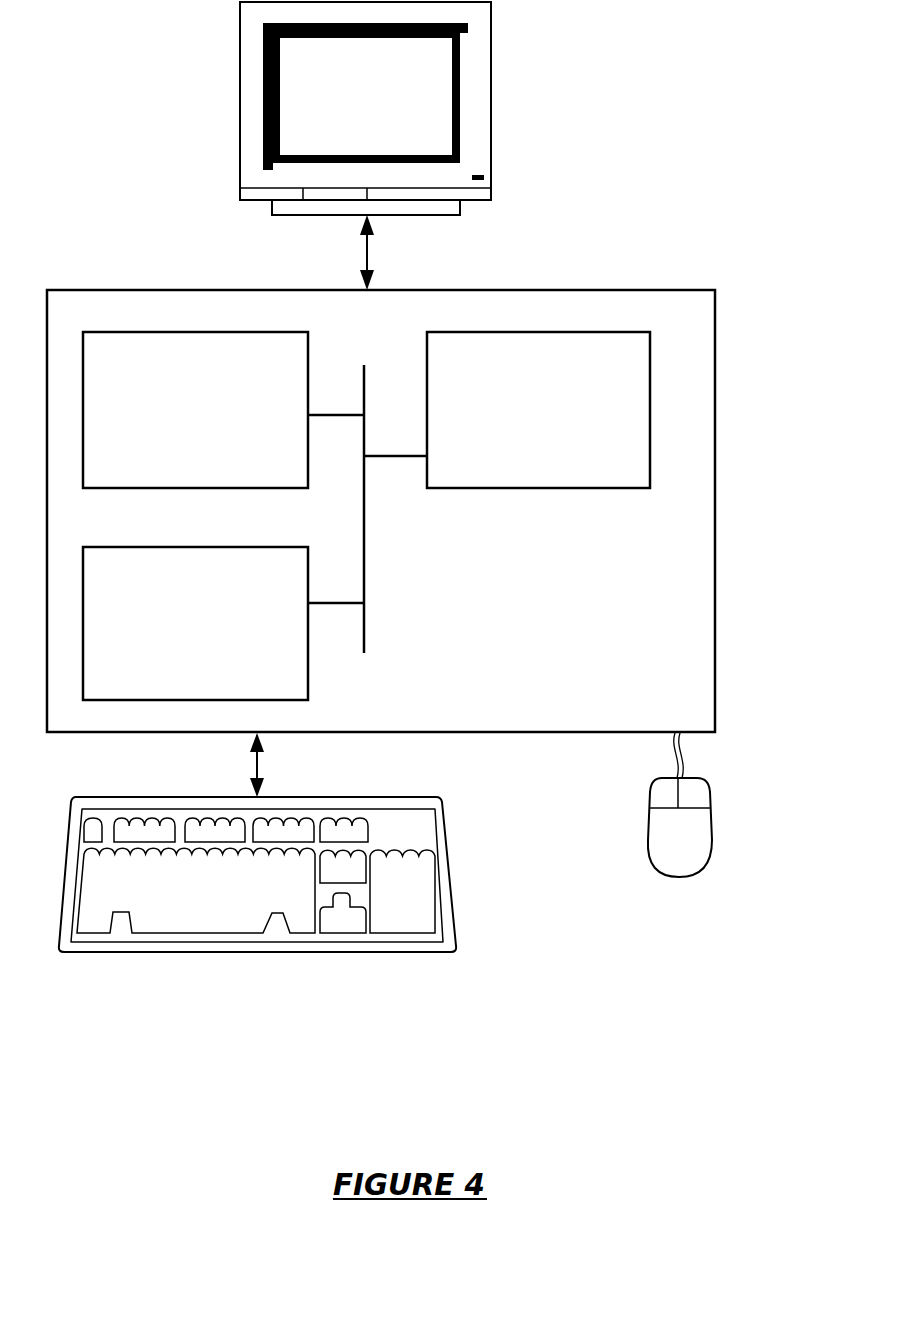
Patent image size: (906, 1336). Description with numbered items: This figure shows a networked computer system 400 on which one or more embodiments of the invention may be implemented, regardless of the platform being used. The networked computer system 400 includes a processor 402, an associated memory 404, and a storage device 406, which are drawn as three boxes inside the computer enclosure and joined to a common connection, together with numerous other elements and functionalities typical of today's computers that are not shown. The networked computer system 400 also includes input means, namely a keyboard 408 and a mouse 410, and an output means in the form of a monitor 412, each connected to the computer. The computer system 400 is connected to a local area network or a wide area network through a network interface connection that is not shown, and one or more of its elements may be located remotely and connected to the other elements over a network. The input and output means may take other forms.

The networked computer system 400 is at (736, 147).
The processor 402 is at (561, 421).
The memory 404 is at (218, 421).
The storage device 406 is at (216, 634).
The keyboard 408 is at (212, 914).
The mouse 410 is at (700, 847).
The monitor 412 is at (388, 112).